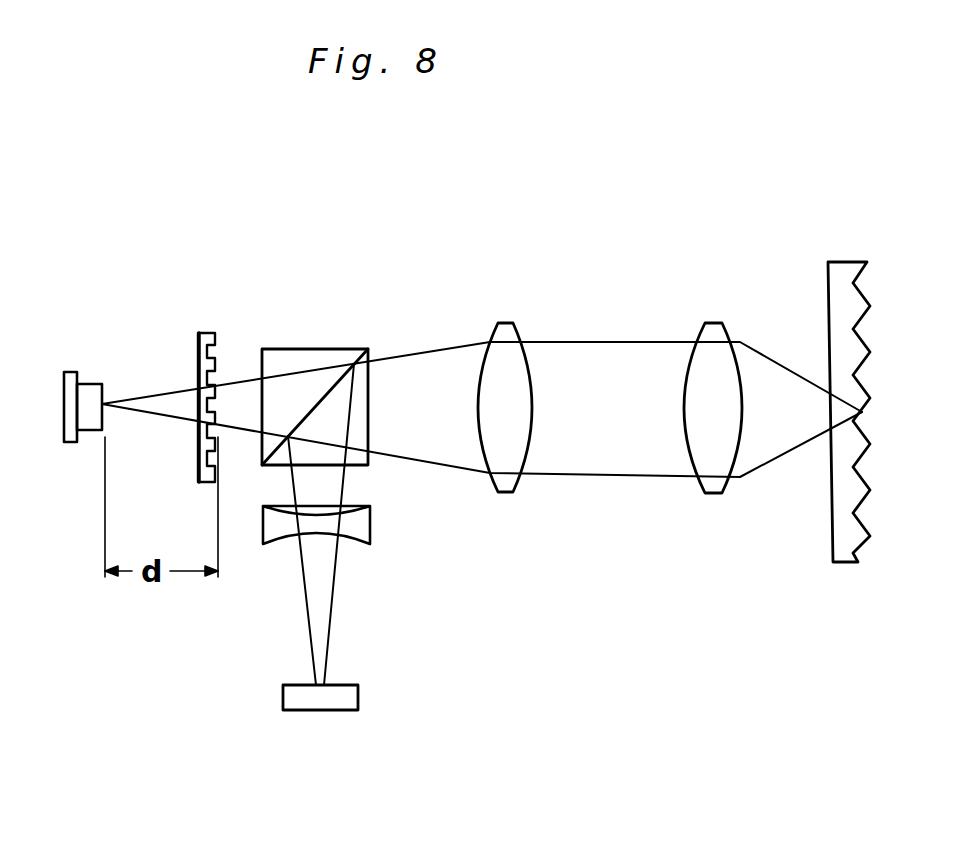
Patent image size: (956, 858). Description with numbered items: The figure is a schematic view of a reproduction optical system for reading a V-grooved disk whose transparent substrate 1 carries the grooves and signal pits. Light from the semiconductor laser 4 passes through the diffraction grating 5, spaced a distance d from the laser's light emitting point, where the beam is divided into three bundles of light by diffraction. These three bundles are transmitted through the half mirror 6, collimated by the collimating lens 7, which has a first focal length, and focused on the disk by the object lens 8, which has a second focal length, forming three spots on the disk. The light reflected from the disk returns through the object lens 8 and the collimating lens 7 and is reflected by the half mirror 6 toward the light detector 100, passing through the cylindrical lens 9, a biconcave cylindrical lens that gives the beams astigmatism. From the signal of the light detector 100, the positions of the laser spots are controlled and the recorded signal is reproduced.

The transparent substrate 1 is at (845, 275).
The semiconductor laser 4 is at (83, 390).
The diffraction grating 5 is at (205, 333).
The half mirror 6 is at (317, 358).
The collimating lens 7 is at (510, 328).
The object lens 8 is at (720, 330).
The cylindrical lens 9 is at (362, 527).
The light detector 100 is at (345, 692).